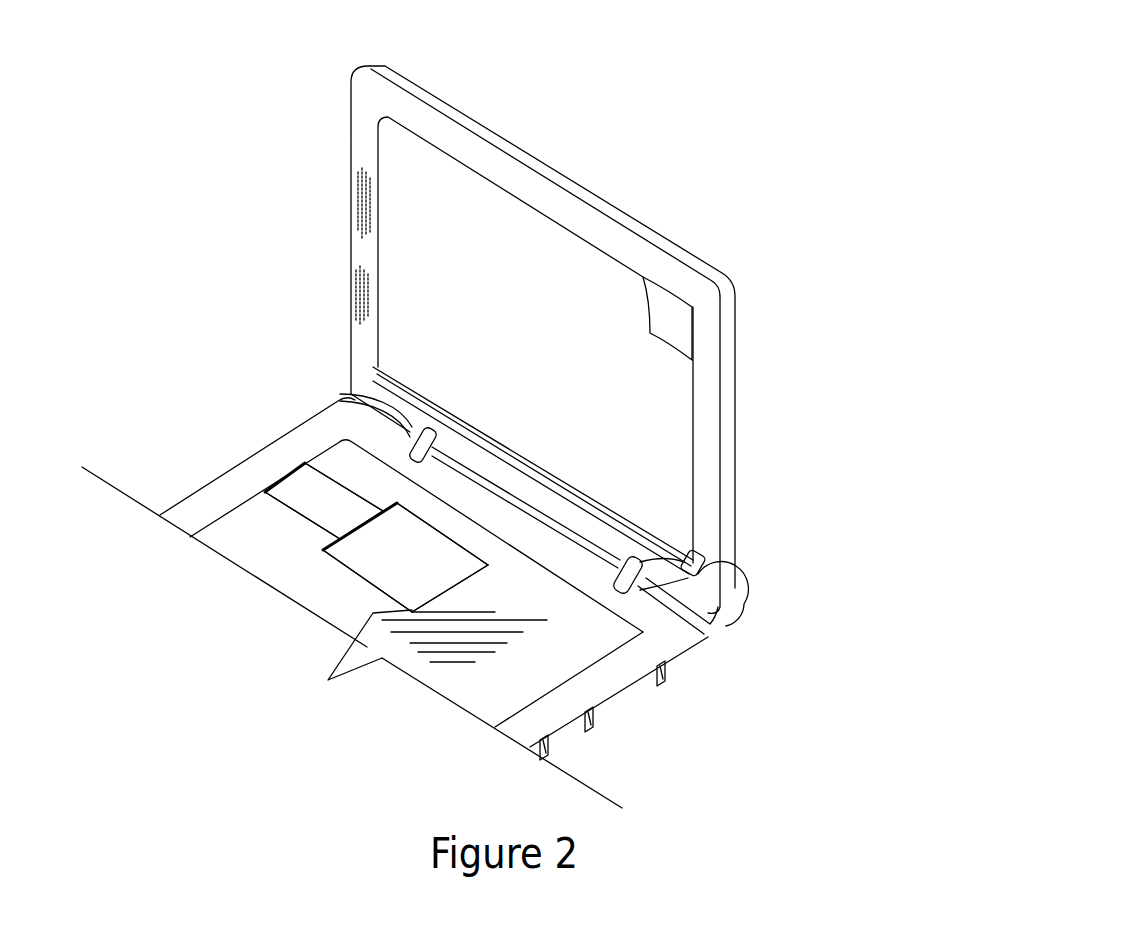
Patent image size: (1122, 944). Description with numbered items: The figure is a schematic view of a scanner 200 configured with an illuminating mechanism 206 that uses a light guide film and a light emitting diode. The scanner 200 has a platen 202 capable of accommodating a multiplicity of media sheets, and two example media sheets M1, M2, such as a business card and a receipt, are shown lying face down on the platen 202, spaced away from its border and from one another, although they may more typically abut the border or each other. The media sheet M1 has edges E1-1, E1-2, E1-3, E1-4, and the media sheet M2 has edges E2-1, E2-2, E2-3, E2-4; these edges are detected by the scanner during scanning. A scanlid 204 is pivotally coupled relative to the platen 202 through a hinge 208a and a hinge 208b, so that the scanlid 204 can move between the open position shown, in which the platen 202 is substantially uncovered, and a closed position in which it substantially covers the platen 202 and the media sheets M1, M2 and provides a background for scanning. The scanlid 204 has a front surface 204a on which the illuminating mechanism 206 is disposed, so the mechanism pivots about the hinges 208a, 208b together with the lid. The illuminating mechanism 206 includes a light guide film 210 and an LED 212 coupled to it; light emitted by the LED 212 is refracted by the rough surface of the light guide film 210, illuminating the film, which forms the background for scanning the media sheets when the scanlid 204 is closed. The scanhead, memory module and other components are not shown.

The scanner 200 is at (964, 111).
The platen 202 is at (245, 513).
The scanlid 204 is at (728, 386).
The front surface 204a is at (545, 182).
The illuminating mechanism 206 is at (708, 546).
The hinge 208a is at (345, 396).
The hinge 208b is at (704, 634).
The light guide film 210 is at (577, 381).
The LED 212 is at (731, 594).
The edge E1-1 is at (300, 467).
The edge E1-2 is at (352, 471).
The edge E1-3 is at (350, 532).
The edge E1-4 is at (268, 497).
The edge E2-1 is at (345, 542).
The edge E2-2 is at (437, 528).
The edge E2-3 is at (445, 586).
The edge E2-4 is at (367, 587).
The media sheet M1 is at (287, 470).
The media sheet M2 is at (482, 556).